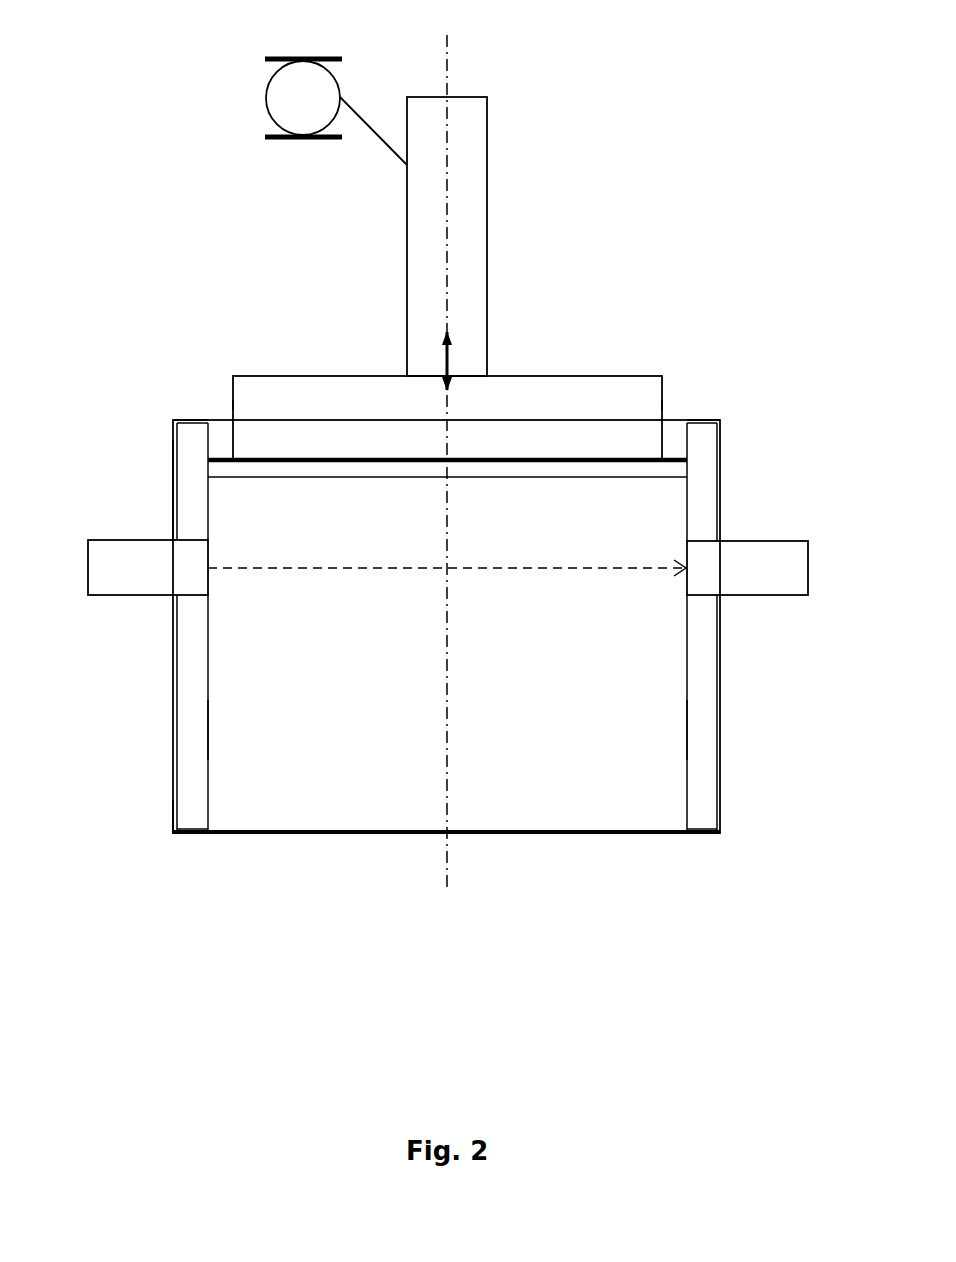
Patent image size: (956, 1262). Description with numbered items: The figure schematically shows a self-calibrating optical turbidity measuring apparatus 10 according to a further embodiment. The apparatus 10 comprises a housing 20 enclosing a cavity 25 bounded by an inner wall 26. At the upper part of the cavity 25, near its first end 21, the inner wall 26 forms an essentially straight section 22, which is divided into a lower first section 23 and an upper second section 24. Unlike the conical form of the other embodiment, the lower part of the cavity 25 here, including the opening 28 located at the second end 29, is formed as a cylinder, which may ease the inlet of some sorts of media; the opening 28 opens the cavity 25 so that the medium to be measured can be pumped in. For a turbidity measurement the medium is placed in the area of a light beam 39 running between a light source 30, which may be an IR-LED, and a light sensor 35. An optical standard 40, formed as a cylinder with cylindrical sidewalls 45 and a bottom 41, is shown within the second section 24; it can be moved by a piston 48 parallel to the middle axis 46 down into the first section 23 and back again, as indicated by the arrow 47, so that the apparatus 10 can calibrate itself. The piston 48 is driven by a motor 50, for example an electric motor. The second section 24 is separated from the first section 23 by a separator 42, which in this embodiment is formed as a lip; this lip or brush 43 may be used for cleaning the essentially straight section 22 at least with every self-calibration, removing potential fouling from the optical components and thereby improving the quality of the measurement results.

The self-calibrating optical turbidity measuring apparatus 10 is at (742, 136).
The housing 20 is at (173, 700).
The first end 21 is at (147, 520).
The straight section 22 is at (230, 547).
The first section 23 is at (230, 592).
The second section 24 is at (152, 425).
The cavity 25 is at (503, 689).
The inner wall 26 is at (208, 718).
The opening 28 is at (500, 834).
The second end 29 is at (148, 828).
The light source 30 is at (165, 584).
The light sensor 35 is at (765, 584).
The light beam 39 is at (350, 566).
The optical standard 40 is at (503, 434).
The bottom of the optical standard 41 is at (382, 458).
The separator 42 is at (652, 467).
The lip or brush 43 is at (699, 484).
The sidewalls 45 is at (233, 405).
The middle axis 46 is at (448, 70).
The arrow 47 is at (448, 352).
The piston 48 is at (487, 222).
The motor 50 is at (270, 98).